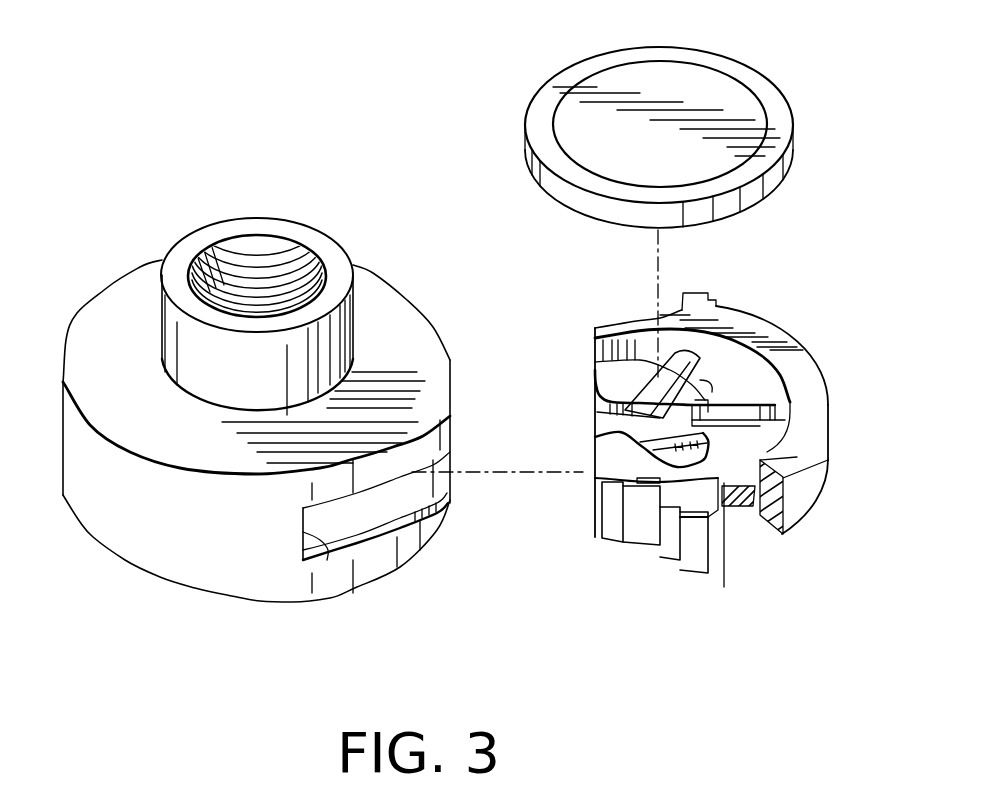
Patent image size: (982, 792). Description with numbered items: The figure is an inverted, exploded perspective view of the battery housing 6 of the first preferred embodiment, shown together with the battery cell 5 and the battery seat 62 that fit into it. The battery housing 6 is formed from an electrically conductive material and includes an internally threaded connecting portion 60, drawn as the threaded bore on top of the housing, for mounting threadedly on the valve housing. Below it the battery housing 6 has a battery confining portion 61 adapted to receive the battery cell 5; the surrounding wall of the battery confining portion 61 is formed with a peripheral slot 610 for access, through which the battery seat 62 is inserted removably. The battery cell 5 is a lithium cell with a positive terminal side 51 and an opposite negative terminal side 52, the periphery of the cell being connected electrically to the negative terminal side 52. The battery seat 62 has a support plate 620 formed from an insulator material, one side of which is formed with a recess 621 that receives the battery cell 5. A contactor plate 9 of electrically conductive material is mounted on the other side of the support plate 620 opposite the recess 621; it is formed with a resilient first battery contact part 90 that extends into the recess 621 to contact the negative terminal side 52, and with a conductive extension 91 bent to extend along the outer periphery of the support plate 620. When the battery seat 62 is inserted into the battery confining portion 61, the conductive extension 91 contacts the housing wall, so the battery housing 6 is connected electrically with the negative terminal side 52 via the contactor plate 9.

The battery cell 5 is at (550, 78).
The positive terminal side 51 is at (575, 118).
The negative terminal side 52 is at (547, 200).
The battery housing 6 is at (108, 287).
The internally threaded connecting portion 60 is at (203, 257).
The battery confining portion 61 is at (353, 517).
The peripheral slot 610 is at (327, 560).
The battery seat 62 is at (755, 308).
The support plate 620 is at (735, 407).
The recess 621 is at (743, 447).
The contactor plate 9 is at (614, 415).
The first battery contact part 90 is at (665, 387).
The conductive extension 91 is at (622, 517).